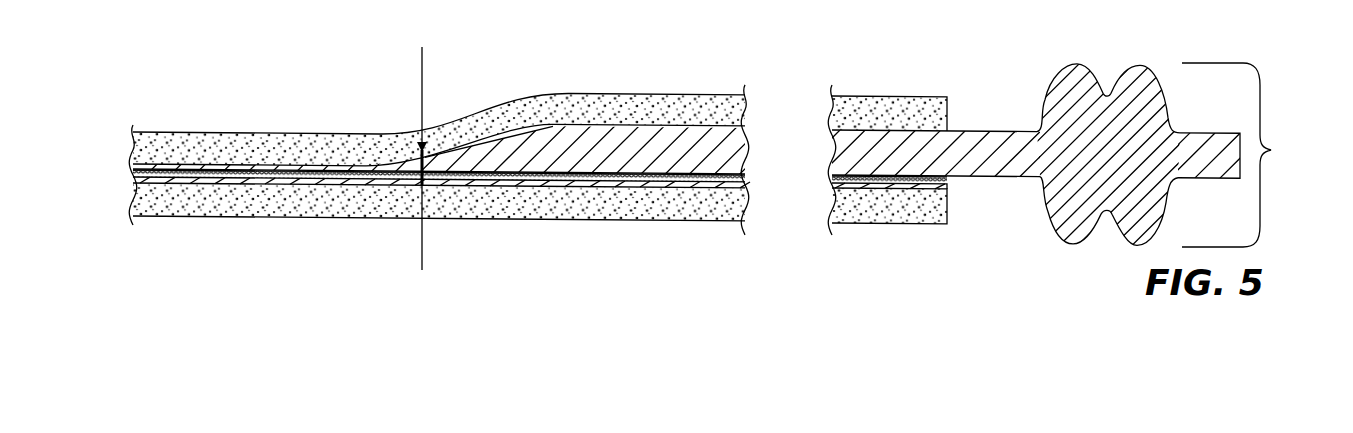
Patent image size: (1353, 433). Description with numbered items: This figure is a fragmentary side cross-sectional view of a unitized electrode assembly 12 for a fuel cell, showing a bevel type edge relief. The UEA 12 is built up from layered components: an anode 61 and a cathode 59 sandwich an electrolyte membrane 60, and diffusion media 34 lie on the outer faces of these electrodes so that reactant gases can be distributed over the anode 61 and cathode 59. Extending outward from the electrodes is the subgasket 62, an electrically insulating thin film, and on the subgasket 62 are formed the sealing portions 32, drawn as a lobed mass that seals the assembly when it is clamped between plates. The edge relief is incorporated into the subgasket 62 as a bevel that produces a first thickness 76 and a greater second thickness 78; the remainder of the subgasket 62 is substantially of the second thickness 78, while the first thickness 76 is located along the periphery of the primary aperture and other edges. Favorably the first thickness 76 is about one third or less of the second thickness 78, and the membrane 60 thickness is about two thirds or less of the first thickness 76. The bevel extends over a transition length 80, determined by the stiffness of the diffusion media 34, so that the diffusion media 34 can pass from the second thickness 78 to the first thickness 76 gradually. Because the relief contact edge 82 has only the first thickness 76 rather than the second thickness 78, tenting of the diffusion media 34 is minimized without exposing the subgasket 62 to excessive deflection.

The unitized electrode assembly 12 is at (1250, 155).
The sealing portion 32 is at (1137, 102).
The diffusion media 34 is at (298, 152).
The cathode 59 is at (745, 178).
The electrolyte membrane 60 is at (340, 173).
The anode 61 is at (948, 188).
The subgasket 62 is at (983, 152).
The first thickness 76 is at (422, 171).
The second thickness 78 is at (757, 125).
The transition length 80 is at (571, 87).
The relief contact edge 82 is at (394, 182).